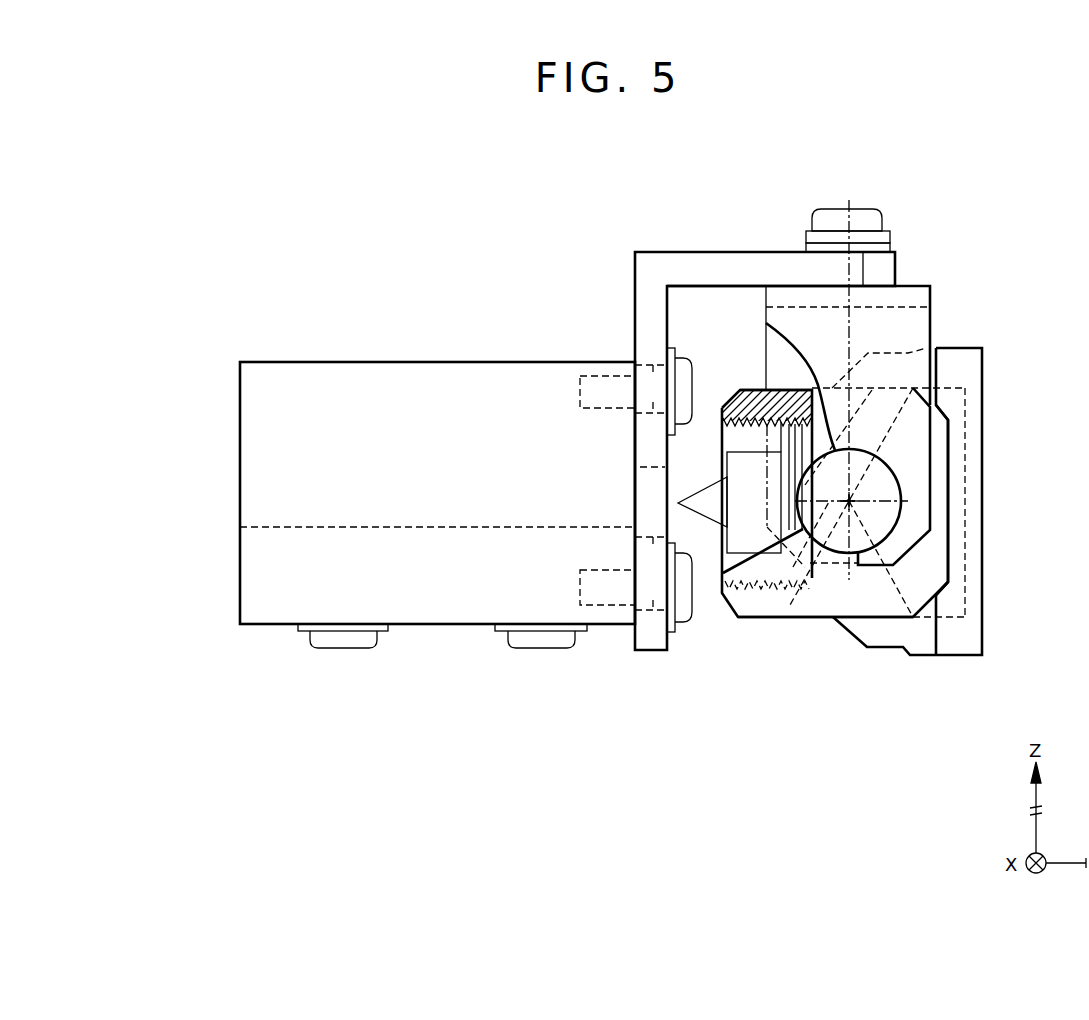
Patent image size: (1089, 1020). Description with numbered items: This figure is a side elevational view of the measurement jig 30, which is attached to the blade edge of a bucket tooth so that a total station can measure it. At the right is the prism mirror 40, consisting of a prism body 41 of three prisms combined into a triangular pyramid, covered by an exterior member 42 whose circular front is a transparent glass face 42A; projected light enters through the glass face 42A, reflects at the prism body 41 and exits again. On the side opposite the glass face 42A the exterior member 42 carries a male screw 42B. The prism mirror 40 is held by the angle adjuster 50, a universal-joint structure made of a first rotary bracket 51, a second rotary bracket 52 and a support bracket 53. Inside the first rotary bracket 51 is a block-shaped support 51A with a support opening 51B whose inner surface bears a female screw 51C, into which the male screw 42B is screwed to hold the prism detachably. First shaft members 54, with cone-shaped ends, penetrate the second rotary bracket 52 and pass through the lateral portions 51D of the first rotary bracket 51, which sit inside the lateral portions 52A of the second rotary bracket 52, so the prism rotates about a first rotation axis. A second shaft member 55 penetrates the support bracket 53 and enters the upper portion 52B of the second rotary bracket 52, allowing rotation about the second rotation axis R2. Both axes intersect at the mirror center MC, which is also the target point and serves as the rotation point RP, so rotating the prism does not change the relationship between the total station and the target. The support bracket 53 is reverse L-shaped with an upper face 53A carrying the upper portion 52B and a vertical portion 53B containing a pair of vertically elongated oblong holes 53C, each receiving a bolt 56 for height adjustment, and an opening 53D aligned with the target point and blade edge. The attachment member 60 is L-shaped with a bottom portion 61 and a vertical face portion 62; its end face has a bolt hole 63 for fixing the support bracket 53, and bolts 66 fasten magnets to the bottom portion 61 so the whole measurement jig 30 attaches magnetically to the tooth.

The measurement jig 30 is at (514, 184).
The prism mirror 40 is at (1016, 391).
The prism body 41 is at (958, 473).
The exterior member 42 is at (972, 633).
The glass face 42A is at (985, 558).
The male screw 42B is at (788, 477).
The angle adjuster 50 is at (921, 246).
The first rotary bracket 51 is at (783, 605).
The support 51A is at (727, 407).
The support opening 51B is at (712, 407).
The female screw 51C is at (800, 386).
The lateral portions 51D is at (860, 607).
The second rotary bracket 52 is at (918, 325).
The lateral portions 52A is at (920, 450).
The upper portion 52B is at (913, 285).
The support bracket 53 is at (693, 262).
The upper face 53A is at (727, 262).
The vertical portion 53B is at (636, 330).
The oblong holes 53C is at (620, 378).
The opening 53D is at (640, 467).
The first shaft members 54 is at (886, 515).
The second shaft member 55 is at (862, 215).
The bolt 56 is at (692, 383).
The attachment member 60 is at (372, 378).
The bottom portion 61 is at (262, 527).
The vertical face portion 62 is at (254, 398).
The bolt hole 63 is at (580, 390).
The bolts 66 is at (340, 645).
The second rotation axis R2 is at (845, 210).
The mirror center MC is at (848, 502).
The rotation point RP is at (849, 501).